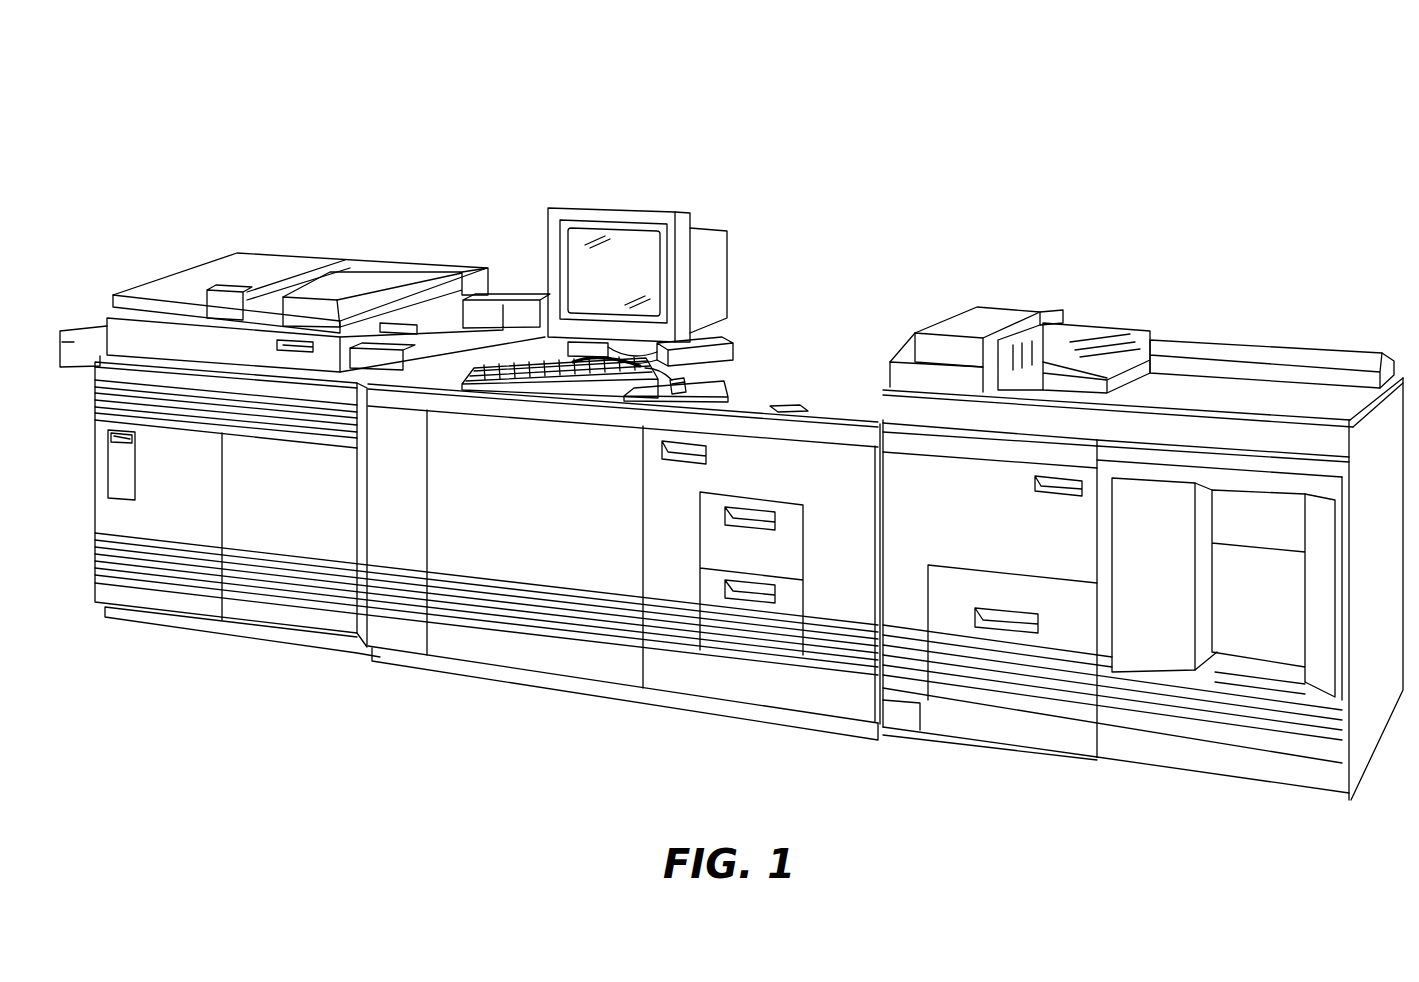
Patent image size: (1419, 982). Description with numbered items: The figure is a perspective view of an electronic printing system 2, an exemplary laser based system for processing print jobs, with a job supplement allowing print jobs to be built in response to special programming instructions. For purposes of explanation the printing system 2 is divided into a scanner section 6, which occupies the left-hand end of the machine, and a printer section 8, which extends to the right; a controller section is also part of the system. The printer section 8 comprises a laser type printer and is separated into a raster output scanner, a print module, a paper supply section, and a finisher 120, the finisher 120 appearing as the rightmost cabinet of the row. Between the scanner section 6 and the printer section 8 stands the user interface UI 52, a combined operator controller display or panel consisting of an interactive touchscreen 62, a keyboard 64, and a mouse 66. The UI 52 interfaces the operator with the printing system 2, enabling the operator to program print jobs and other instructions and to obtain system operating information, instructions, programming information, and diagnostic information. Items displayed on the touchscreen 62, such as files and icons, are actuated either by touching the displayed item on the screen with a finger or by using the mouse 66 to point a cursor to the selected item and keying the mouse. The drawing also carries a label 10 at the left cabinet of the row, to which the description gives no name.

The printing system 2 is at (812, 103).
The scanner section 6 is at (337, 226).
The printer section 8 is at (870, 302).
The printer cabinet / marking engine 10 is at (82, 512).
The UI 52 is at (638, 192).
The interactive touchscreen 62 is at (580, 280).
The keyboard 64 is at (547, 392).
The mouse 66 is at (643, 404).
The finisher 120 is at (1182, 259).